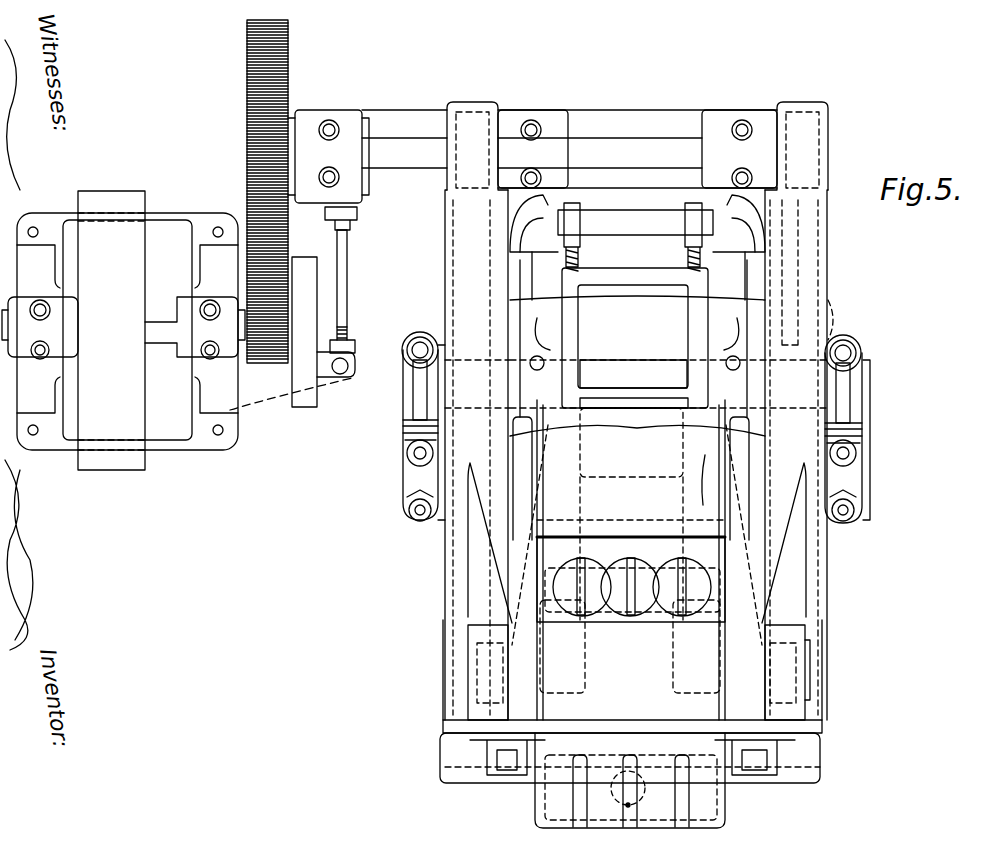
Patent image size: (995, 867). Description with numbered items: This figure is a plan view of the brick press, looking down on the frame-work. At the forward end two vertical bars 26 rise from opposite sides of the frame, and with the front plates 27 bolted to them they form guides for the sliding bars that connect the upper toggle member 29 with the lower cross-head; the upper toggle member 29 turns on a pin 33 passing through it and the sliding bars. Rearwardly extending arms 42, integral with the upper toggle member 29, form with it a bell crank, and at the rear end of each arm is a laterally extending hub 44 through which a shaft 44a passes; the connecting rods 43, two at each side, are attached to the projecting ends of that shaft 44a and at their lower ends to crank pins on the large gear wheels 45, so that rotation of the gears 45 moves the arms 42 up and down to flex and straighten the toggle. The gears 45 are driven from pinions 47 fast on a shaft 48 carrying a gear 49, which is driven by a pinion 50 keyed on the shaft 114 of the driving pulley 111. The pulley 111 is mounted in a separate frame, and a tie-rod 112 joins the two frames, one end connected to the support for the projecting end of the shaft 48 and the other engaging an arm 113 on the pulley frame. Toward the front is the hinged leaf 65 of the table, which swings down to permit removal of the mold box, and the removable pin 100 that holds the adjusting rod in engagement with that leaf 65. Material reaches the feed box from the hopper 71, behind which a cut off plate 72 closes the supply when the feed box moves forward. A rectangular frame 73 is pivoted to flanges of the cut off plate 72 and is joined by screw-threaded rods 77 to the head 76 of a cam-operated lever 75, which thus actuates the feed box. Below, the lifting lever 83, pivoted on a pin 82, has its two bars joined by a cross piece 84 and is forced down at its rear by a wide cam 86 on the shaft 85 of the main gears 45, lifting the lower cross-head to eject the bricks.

The vertical bars 26 is at (465, 633).
The front plates 27 is at (803, 727).
The upper toggle member 29 is at (735, 688).
The pin 33 is at (800, 670).
The rearwardly extending arms 42 is at (520, 557).
The connecting rods 43 is at (414, 452).
The hub 44 is at (427, 507).
The shaft 44a is at (867, 447).
The large gear wheels 45 is at (445, 236).
The pinions 47 is at (476, 128).
The shaft 48 is at (422, 153).
The gear 49 is at (278, 98).
The pinion 50 is at (265, 355).
The hinged leaf 65 is at (697, 805).
The hopper 71 is at (603, 548).
The cut off plate 72 is at (703, 505).
The rectangular frame 73 is at (577, 332).
The lever 75 is at (543, 295).
The head 76 is at (598, 218).
The screw-threaded rods 77 is at (690, 262).
The pin 82 is at (605, 493).
The lifting lever 83 is at (697, 663).
The cross piece 84 is at (620, 354).
The shaft 85 is at (788, 363).
The cam 86 is at (658, 362).
The removable pin 100 is at (628, 805).
The driving pulley 111 is at (122, 455).
The tie-rod 112 is at (348, 278).
The arm 113 is at (262, 398).
The shaft 114 is at (163, 330).